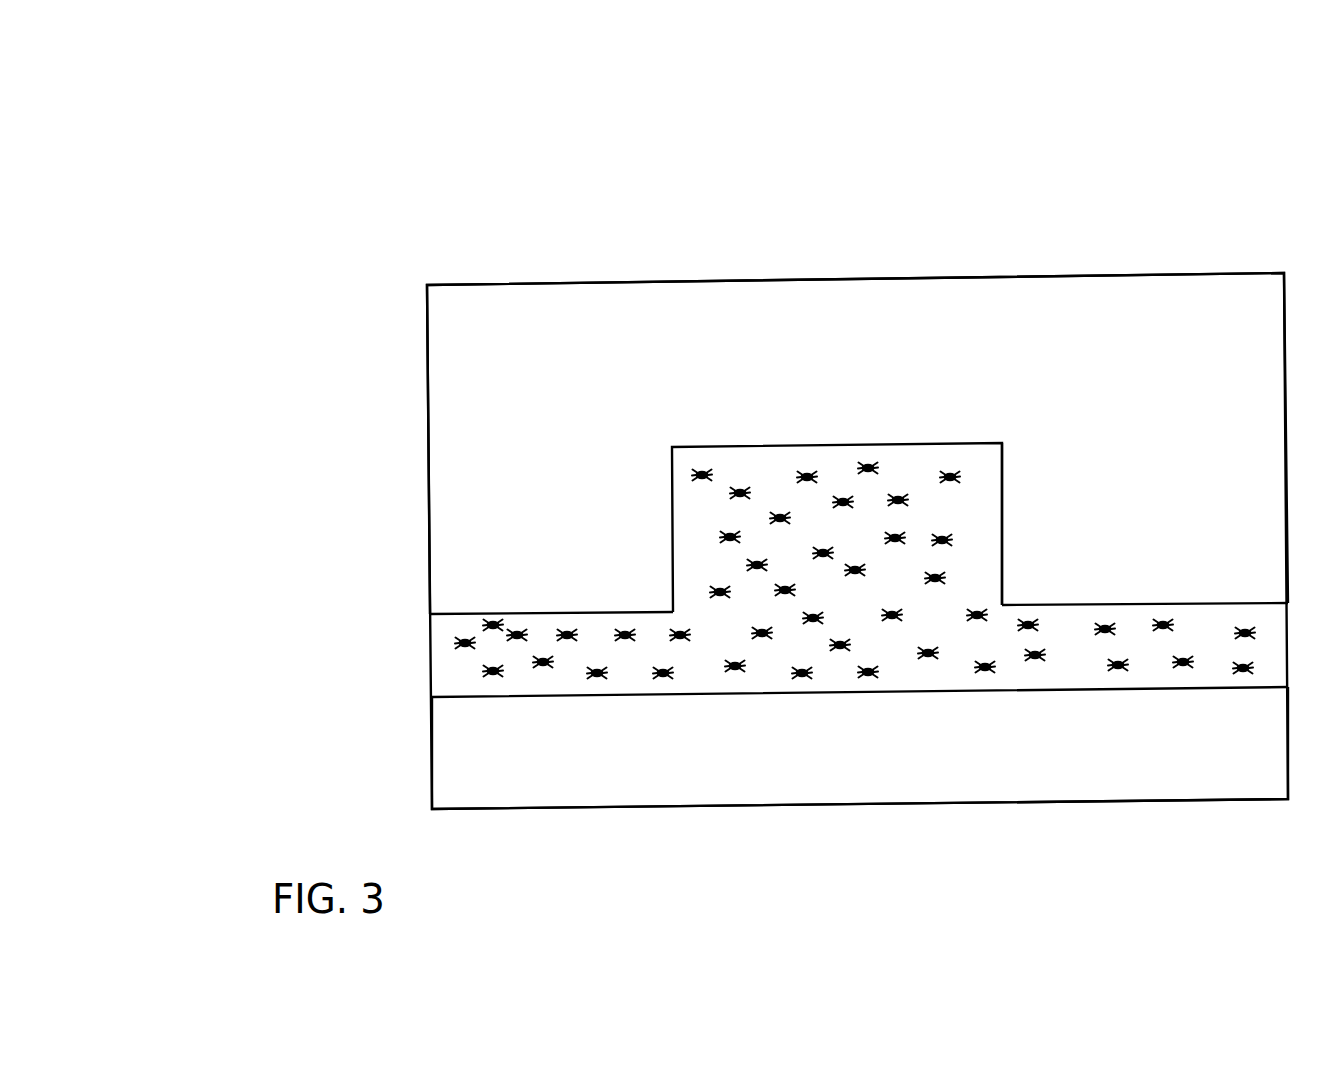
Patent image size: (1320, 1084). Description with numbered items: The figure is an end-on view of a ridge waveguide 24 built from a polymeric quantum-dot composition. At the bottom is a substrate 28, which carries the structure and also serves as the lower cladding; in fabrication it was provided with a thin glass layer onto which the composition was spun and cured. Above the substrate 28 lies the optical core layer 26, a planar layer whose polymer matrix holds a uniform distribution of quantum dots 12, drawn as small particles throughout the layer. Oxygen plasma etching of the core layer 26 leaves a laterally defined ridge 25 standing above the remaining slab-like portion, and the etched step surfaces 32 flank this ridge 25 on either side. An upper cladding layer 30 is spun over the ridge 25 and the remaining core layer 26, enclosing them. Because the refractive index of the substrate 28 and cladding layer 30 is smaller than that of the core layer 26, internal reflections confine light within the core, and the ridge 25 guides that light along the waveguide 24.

The ridge waveguide 24 is at (515, 152).
The upper cladding layer 30 is at (440, 285).
The optical core layer 26 is at (917, 442).
The ridge 25 is at (1002, 507).
The implanted layer region 32 is at (648, 612).
The quantum dots 12 is at (692, 476).
The substrate 28 is at (430, 753).